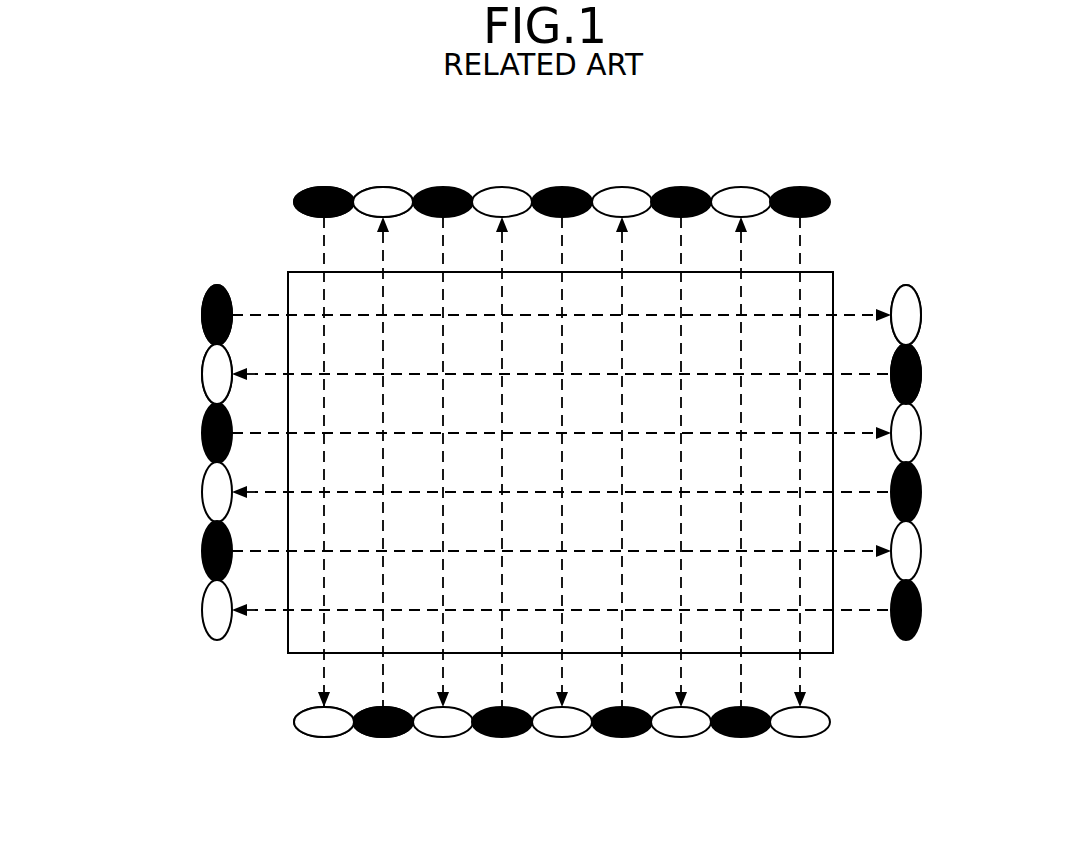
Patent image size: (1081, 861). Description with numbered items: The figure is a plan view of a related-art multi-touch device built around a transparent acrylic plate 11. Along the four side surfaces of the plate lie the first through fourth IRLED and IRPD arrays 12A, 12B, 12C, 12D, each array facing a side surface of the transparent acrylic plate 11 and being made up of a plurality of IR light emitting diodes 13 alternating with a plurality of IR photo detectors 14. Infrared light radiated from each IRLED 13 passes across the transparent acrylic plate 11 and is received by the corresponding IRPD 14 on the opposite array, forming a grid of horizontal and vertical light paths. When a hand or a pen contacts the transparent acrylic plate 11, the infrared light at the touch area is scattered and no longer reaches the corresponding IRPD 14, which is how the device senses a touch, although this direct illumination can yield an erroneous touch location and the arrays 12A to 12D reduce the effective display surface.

The transparent acrylic plate 11 is at (815, 270).
The first IRLED and IRPD array 12A is at (157, 474).
The second IRLED and IRPD array 12B is at (974, 468).
The third IRLED and IRPD array 12C is at (547, 158).
The fourth IRLED and IRPD array 12D is at (552, 752).
The IR light emitting diode 13 is at (319, 187).
The IR photo detector 14 is at (384, 187).